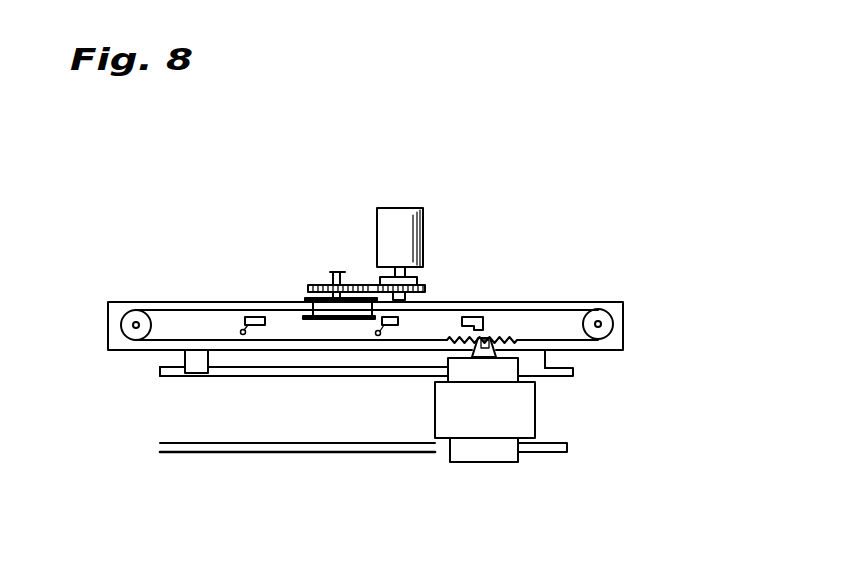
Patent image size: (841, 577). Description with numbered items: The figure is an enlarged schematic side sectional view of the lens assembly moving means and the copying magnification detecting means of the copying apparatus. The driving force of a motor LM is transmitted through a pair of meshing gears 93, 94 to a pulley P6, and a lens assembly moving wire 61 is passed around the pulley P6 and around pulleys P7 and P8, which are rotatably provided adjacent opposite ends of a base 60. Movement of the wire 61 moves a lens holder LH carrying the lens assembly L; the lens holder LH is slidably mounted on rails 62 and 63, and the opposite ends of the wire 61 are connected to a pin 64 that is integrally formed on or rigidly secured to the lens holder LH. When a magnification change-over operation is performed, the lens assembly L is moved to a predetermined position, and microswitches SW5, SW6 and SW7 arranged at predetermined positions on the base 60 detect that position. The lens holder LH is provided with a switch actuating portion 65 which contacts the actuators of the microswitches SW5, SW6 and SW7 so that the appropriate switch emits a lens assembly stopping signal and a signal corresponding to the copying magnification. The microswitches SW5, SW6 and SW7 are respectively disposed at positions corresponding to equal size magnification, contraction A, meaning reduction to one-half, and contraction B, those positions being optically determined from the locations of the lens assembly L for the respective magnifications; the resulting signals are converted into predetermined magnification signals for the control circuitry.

The base 60 is at (554, 302).
The lens assembly moving wire 61 is at (582, 310).
The rail 62 is at (573, 372).
The rail 63 is at (567, 447).
The pin 64 is at (482, 360).
The switch actuating portion 65 is at (487, 337).
The gear 93 is at (420, 280).
The gear 94 is at (320, 284).
The pulley P6 is at (307, 299).
The pulley P7 is at (143, 304).
The pulley P8 is at (623, 318).
The motor LM is at (398, 216).
The lens assembly L is at (535, 400).
The lens holder LH is at (493, 462).
The microswitch SW5 is at (478, 317).
The microswitch SW6 is at (390, 327).
The microswitch SW7 is at (256, 326).